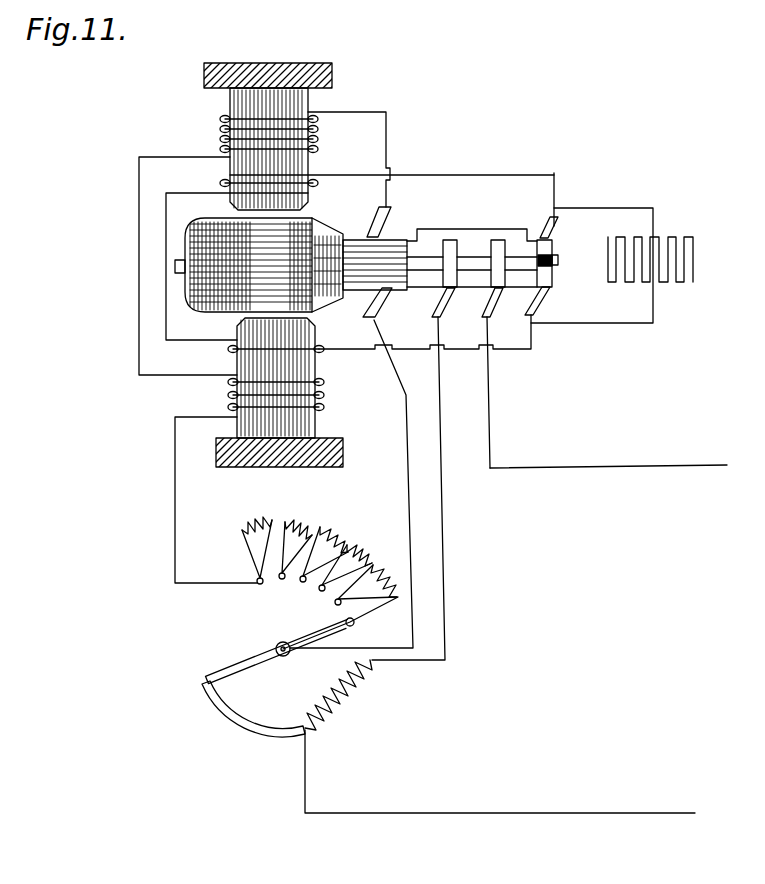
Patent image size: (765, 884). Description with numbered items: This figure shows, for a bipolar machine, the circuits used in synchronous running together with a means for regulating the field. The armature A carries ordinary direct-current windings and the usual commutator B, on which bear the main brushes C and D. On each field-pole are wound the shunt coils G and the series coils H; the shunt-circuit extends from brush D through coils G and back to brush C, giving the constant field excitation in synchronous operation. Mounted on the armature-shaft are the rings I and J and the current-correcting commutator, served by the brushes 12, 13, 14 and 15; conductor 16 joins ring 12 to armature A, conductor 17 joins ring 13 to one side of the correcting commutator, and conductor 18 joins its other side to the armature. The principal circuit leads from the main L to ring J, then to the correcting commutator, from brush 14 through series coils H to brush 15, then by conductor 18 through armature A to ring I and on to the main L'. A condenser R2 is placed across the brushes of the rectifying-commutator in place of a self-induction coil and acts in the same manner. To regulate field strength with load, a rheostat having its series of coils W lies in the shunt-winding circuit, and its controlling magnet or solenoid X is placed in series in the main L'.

The armature A is at (200, 222).
The commutator B is at (401, 290).
The brush C is at (391, 212).
The brush D is at (377, 318).
The shunt coils G is at (318, 131).
The series coils H is at (221, 181).
The ring I is at (458, 251).
The ring J is at (491, 282).
The brush 12 is at (417, 474).
The brush 13 is at (496, 378).
The brush 14 is at (542, 301).
The brush 15 is at (558, 227).
The conductor 16 is at (425, 279).
The conductor 17 is at (521, 278).
The conductor 18 is at (471, 226).
The condenser R2 is at (693, 245).
The rheostat coils W is at (335, 518).
The controlling magnet or solenoid X is at (338, 703).
The main L is at (608, 453).
The main L' is at (500, 771).